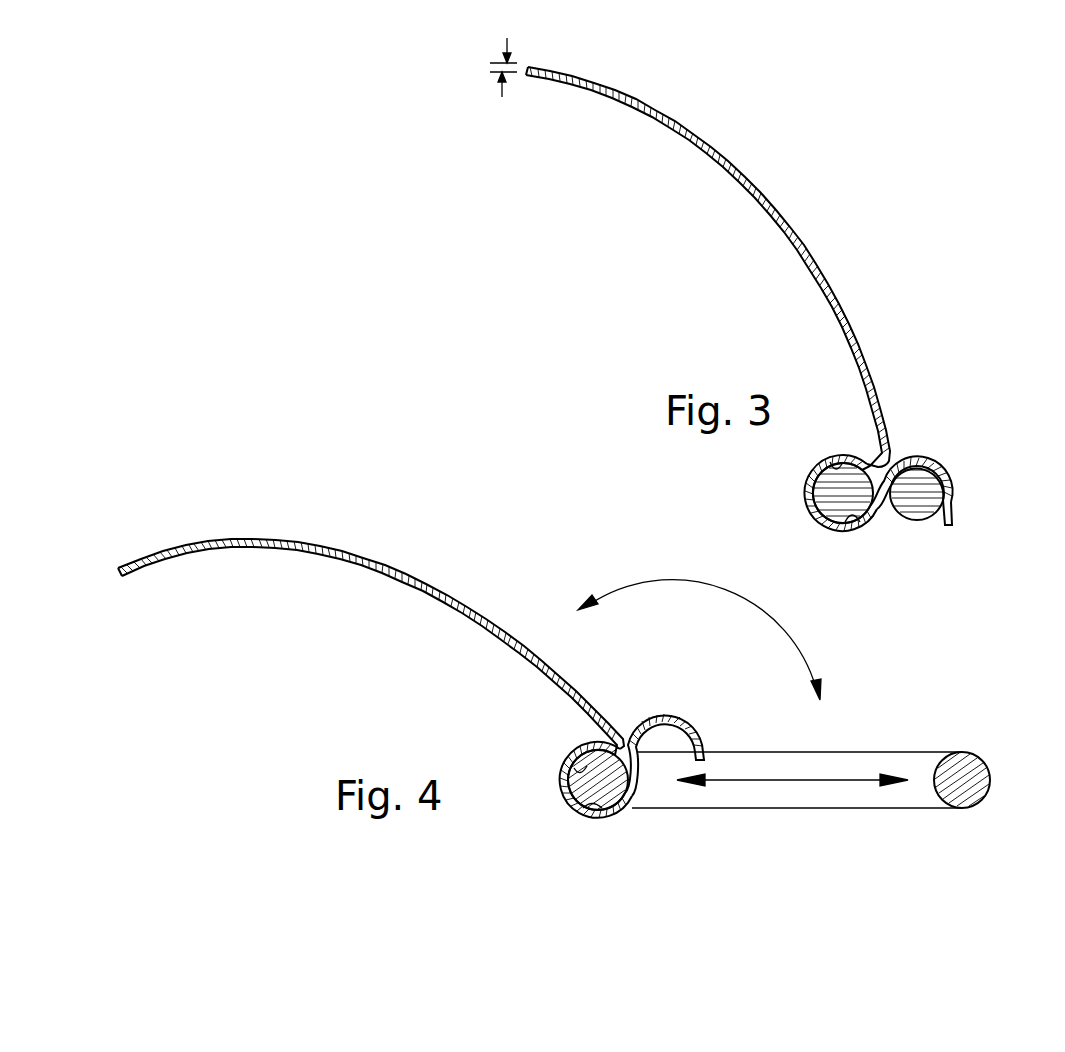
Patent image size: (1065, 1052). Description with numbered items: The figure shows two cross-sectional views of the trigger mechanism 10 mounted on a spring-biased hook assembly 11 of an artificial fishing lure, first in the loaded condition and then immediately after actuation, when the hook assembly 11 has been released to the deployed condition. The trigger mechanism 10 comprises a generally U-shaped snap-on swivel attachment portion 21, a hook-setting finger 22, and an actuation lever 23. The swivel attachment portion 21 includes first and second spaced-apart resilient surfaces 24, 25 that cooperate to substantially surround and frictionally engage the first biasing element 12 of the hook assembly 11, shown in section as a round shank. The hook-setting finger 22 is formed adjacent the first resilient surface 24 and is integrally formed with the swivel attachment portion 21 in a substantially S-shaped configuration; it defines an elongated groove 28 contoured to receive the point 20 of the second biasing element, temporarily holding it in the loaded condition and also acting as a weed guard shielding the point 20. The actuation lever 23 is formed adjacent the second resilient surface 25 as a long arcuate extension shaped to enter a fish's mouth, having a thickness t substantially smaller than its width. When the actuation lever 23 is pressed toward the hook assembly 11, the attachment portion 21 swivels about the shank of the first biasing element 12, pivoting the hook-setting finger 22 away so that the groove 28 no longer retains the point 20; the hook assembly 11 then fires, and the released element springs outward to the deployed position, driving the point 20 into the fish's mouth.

In FIG. 3, the trigger mechanism 10 is at (950, 277).
In FIG. 4, the trigger mechanism 10 is at (491, 552).
In FIG. 4, the hook assembly 11 is at (922, 726).
In FIG. 3, the first biasing element 12 is at (838, 497).
In FIG. 4, the first biasing element 12 is at (583, 788).
In FIG. 3, the point 20 is at (913, 508).
In FIG. 4, the point 20 is at (972, 756).
In FIG. 3, the swivel attachment portion 21 is at (810, 487).
In FIG. 4, the swivel attachment portion 21 is at (567, 797).
In FIG. 3, the hook-setting finger 22 is at (952, 489).
In FIG. 4, the hook-setting finger 22 is at (699, 727).
In FIG. 3, the actuation lever 23 is at (766, 188).
In FIG. 4, the actuation lever 23 is at (358, 551).
In FIG. 3, the first resilient surface 24 is at (835, 458).
In FIG. 4, the first resilient surface 24 is at (580, 767).
In FIG. 3, the second resilient surface 25 is at (856, 514).
In FIG. 4, the second resilient surface 25 is at (592, 817).
In FIG. 3, the elongated groove 28 is at (917, 478).
In FIG. 4, the elongated groove 28 is at (663, 736).
In FIG. 3, the thickness t is at (505, 40).